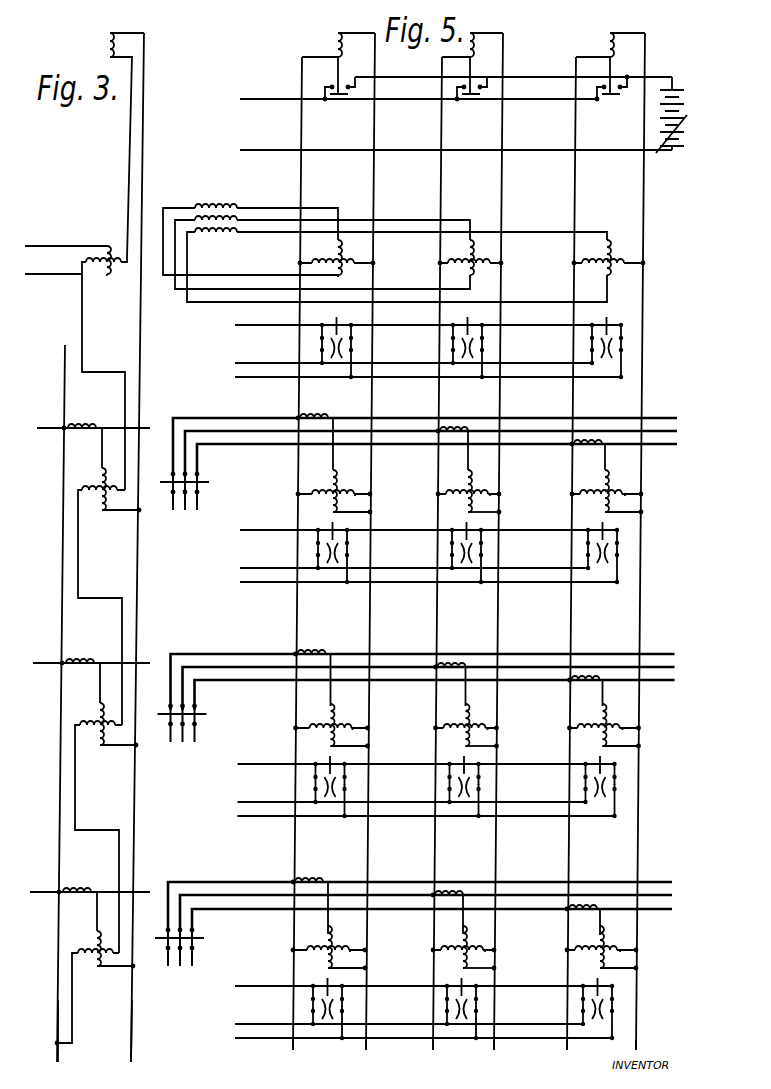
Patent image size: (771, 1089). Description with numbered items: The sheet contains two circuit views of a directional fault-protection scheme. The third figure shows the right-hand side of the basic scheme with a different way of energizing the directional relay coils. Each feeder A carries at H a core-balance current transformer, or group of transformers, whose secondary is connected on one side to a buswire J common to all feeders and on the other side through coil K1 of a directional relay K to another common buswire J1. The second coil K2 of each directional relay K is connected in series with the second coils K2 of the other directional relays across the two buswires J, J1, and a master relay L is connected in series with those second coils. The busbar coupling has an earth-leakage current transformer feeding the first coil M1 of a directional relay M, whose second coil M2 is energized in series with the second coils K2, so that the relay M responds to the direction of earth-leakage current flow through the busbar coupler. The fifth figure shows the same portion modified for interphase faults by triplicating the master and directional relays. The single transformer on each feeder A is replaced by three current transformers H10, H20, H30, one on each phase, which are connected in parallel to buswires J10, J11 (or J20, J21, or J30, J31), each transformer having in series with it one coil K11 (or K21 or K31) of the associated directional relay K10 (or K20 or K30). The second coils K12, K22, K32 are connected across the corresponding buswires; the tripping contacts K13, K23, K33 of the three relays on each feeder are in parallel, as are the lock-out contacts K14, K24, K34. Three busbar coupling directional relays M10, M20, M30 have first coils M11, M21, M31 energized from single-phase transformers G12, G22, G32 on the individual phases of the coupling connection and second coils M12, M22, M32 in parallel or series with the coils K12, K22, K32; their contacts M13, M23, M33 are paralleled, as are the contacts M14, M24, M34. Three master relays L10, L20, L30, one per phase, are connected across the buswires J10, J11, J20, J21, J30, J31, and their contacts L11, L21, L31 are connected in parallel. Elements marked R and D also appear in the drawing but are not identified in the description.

In FIG. 3, the master relay L is at (118, 37).
In FIG. 3, the directional relay M is at (76, 351).
In FIG. 3, the first coil M1 is at (107, 246).
In FIG. 3, the second coil M2 is at (116, 272).
In FIG. 3, the core-balance current transformer H is at (88, 426).
In FIG. 3, the directional relay K is at (87, 704).
In FIG. 3, the coil K1 is at (100, 505).
In FIG. 3, the second coil K2 is at (78, 492).
In FIG. 3, the feeder A is at (47, 430).
In FIG. 5, the feeder A is at (422, 657).
In FIG. 3, the buswire J is at (55, 1052).
In FIG. 3, the buswire J1 is at (128, 1054).
In FIG. 5, the master relay L10 is at (335, 45).
In FIG. 5, the contact L11 is at (340, 98).
In FIG. 5, the master relay L20 is at (505, 47).
In FIG. 5, the contact L21 is at (472, 98).
In FIG. 5, the master relay L30 is at (613, 45).
In FIG. 5, the contact L31 is at (612, 98).
In FIG. 5, the battery R is at (668, 130).
In FIG. 5, the single-phase transformer G12 is at (203, 180).
In FIG. 5, the single-phase transformer G22 is at (209, 218).
In FIG. 5, the single-phase transformer G32 is at (223, 231).
In FIG. 5, the busbar coupling directional relay M10 is at (330, 249).
In FIG. 5, the first coil M11 is at (377, 252).
In FIG. 5, the second coil M12 is at (355, 265).
In FIG. 5, the contact M13 is at (320, 348).
In FIG. 5, the contact M14 is at (352, 343).
In FIG. 5, the busbar coupling directional relay M20 is at (460, 252).
In FIG. 5, the first coil M21 is at (476, 251).
In FIG. 5, the second coil M22 is at (490, 265).
In FIG. 5, the contact M23 is at (451, 348).
In FIG. 5, the contact M24 is at (483, 345).
In FIG. 5, the busbar coupling directional relay M30 is at (590, 258).
In FIG. 5, the first coil M31 is at (612, 238).
In FIG. 5, the second coil M32 is at (628, 265).
In FIG. 5, the contact M33 is at (590, 348).
In FIG. 5, the contact M34 is at (622, 345).
In FIG. 5, the current transformer H10 is at (317, 655).
In FIG. 5, the current transformer H20 is at (458, 655).
In FIG. 5, the current transformer H30 is at (593, 656).
In FIG. 5, the three-pole switch D is at (201, 719).
In FIG. 5, the directional relay K10 is at (299, 707).
In FIG. 5, the coil K11 is at (373, 708).
In FIG. 5, the second coil K12 is at (384, 727).
In FIG. 5, the tripping contact K13 is at (294, 781).
In FIG. 5, the lock-out contact K14 is at (376, 779).
In FIG. 5, the directional relay K20 is at (445, 667).
In FIG. 5, the coil K21 is at (505, 708).
In FIG. 5, the second coil K22 is at (516, 727).
In FIG. 5, the tripping contact K23 is at (438, 781).
In FIG. 5, the lock-out contact K24 is at (507, 789).
In FIG. 5, the directional relay K30 is at (583, 667).
In FIG. 5, the coil K31 is at (642, 708).
In FIG. 5, the second coil K32 is at (651, 729).
In FIG. 5, the tripping contact K33 is at (575, 781).
In FIG. 5, the lock-out contact K34 is at (643, 781).
In FIG. 5, the buswire J10 is at (292, 1048).
In FIG. 5, the buswire J11 is at (365, 1048).
In FIG. 5, the buswire J20 is at (432, 1048).
In FIG. 5, the buswire J21 is at (493, 1048).
In FIG. 5, the buswire J30 is at (566, 1048).
In FIG. 5, the buswire J31 is at (635, 1048).